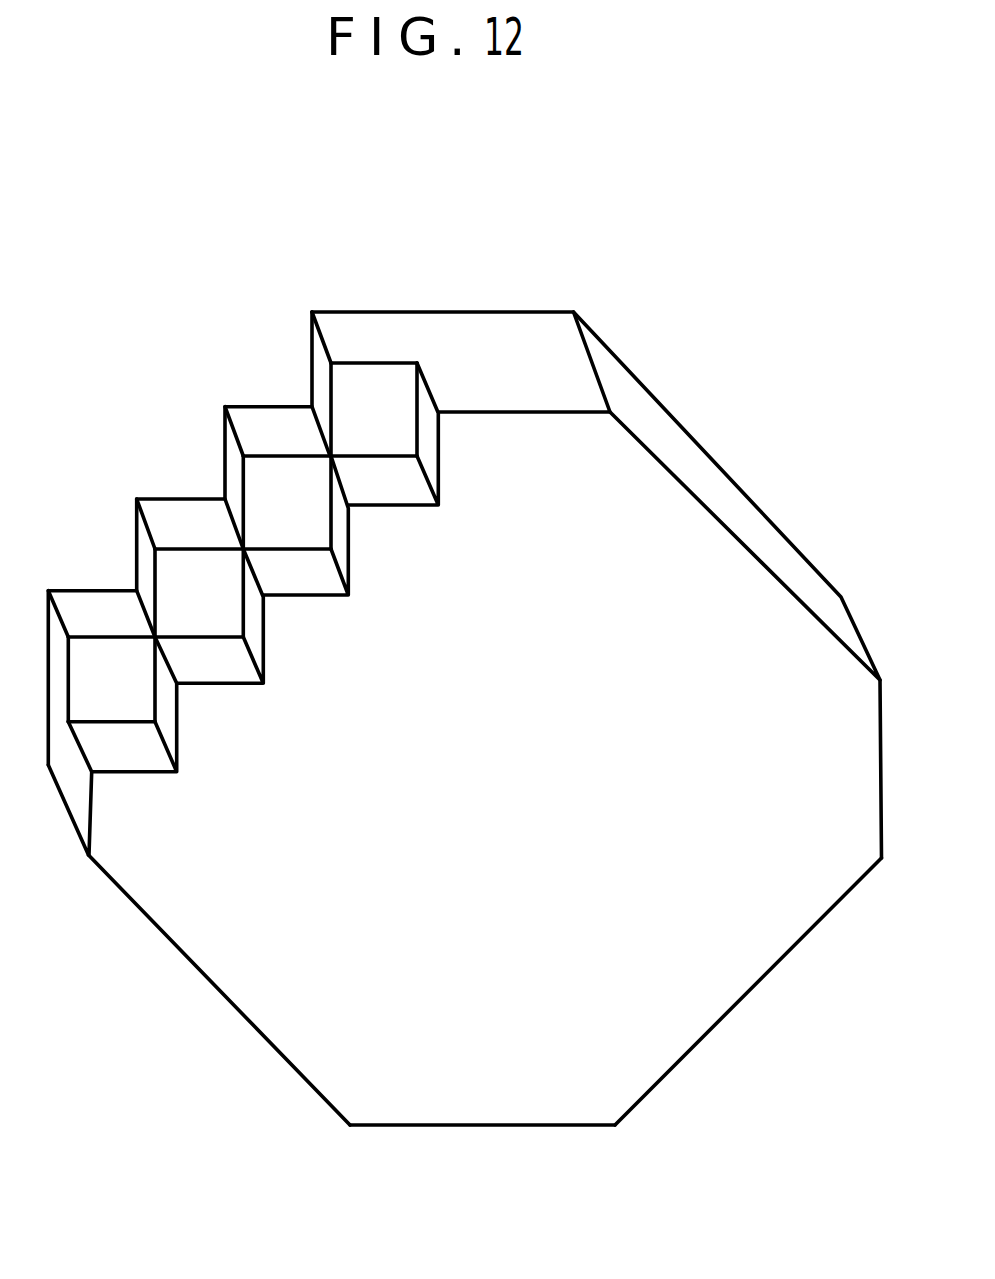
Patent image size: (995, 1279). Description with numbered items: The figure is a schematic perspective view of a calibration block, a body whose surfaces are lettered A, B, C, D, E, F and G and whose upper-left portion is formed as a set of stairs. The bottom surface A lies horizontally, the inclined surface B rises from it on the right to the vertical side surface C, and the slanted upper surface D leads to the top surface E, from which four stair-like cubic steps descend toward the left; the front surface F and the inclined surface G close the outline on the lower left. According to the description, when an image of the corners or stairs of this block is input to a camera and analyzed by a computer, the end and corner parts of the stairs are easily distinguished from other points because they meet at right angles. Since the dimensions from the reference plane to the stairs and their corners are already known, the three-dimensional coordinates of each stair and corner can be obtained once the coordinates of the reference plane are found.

The surface A is at (482, 1103).
The surface B is at (748, 991).
The surface C is at (866, 769).
The surface D is at (727, 496).
The surface E is at (461, 386).
The surface F is at (84, 810).
The surface G is at (220, 990).